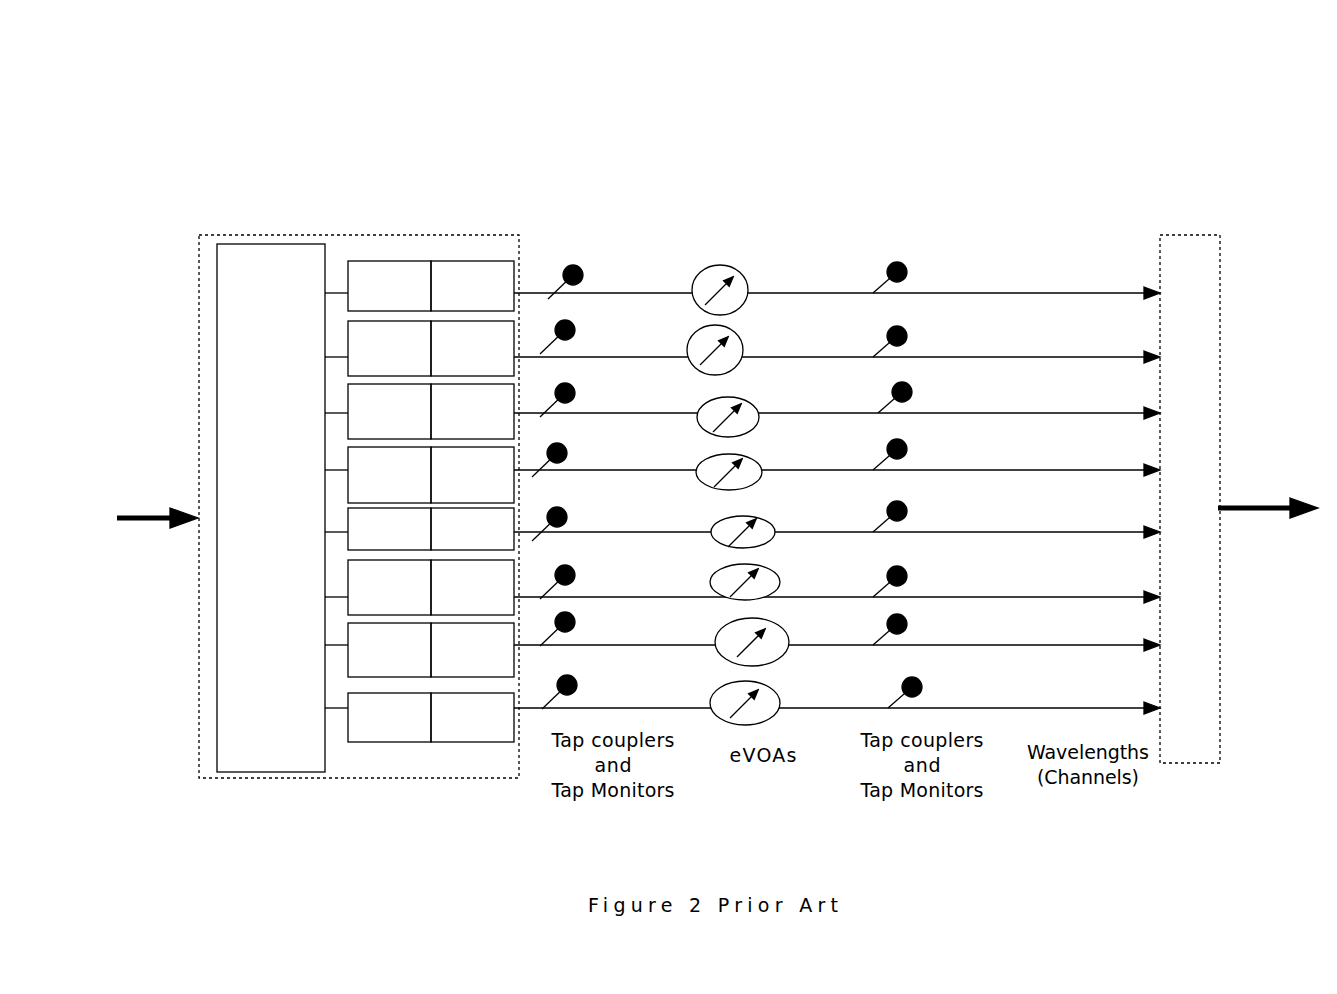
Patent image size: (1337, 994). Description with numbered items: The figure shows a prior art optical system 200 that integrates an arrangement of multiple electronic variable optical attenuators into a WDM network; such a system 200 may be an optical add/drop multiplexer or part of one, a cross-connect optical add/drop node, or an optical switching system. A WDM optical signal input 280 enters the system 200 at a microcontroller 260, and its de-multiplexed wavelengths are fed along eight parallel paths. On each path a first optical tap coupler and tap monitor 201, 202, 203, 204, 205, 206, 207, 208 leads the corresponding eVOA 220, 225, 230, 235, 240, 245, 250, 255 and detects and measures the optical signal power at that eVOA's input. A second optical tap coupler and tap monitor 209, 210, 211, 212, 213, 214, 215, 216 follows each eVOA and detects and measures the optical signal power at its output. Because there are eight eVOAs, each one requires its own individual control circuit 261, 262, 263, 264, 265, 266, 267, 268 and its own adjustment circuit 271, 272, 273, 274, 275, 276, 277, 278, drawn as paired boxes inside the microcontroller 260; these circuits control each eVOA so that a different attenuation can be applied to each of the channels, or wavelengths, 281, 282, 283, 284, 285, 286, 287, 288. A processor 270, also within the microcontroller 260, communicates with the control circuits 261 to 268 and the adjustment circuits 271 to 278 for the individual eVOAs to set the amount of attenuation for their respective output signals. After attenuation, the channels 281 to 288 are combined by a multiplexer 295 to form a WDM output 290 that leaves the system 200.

The optical system 200 is at (306, 110).
The optical tap coupler and tap monitor 201 is at (584, 269).
The optical tap coupler and tap monitor 202 is at (576, 324).
The optical tap coupler and tap monitor 203 is at (576, 387).
The optical tap coupler and tap monitor 204 is at (568, 447).
The optical tap coupler and tap monitor 205 is at (568, 511).
The optical tap coupler and tap monitor 206 is at (576, 569).
The optical tap coupler and tap monitor 207 is at (576, 616).
The optical tap coupler and tap monitor 208 is at (578, 679).
The optical tap coupler and tap monitor 209 is at (911, 272).
The optical tap coupler and tap monitor 210 is at (911, 335).
The optical tap coupler and tap monitor 211 is at (918, 393).
The optical tap coupler and tap monitor 212 is at (911, 447).
The optical tap coupler and tap monitor 213 is at (913, 510).
The optical tap coupler and tap monitor 214 is at (917, 575).
The optical tap coupler and tap monitor 215 is at (918, 623).
The optical tap coupler and tap monitor 216 is at (927, 688).
The eVOA 220 is at (741, 271).
The eVOA 225 is at (736, 331).
The eVOA 230 is at (751, 402).
The eVOA 235 is at (754, 458).
The eVOA 240 is at (767, 520).
The eVOA 245 is at (771, 568).
The eVOA 250 is at (780, 624).
The eVOA 255 is at (771, 686).
The microcontroller 260 is at (325, 235).
The control circuit 261 is at (457, 296).
The control circuit 262 is at (457, 360).
The control circuit 263 is at (457, 416).
The control circuit 264 is at (457, 473).
The control circuit 265 is at (457, 535).
The control circuit 266 is at (457, 600).
The control circuit 267 is at (457, 648).
The control circuit 268 is at (457, 711).
The processor 270 is at (254, 375).
The adjustment circuit 271 is at (375, 296).
The adjustment circuit 272 is at (375, 360).
The adjustment circuit 273 is at (375, 416).
The adjustment circuit 274 is at (375, 473).
The adjustment circuit 275 is at (375, 535).
The adjustment circuit 276 is at (375, 600).
The adjustment circuit 277 is at (375, 648).
The adjustment circuit 278 is at (375, 711).
The WDM optical signal input 280 is at (157, 504).
The channel (wavelength) 281 is at (1113, 293).
The channel (wavelength) 282 is at (1113, 357).
The channel (wavelength) 283 is at (1113, 413).
The channel (wavelength) 284 is at (1113, 470).
The channel (wavelength) 285 is at (1113, 532).
The channel (wavelength) 286 is at (1113, 597).
The channel (wavelength) 287 is at (1113, 645).
The channel (wavelength) 288 is at (1113, 708).
The WDM output 290 is at (1268, 500).
The multiplexer 295 is at (1172, 235).